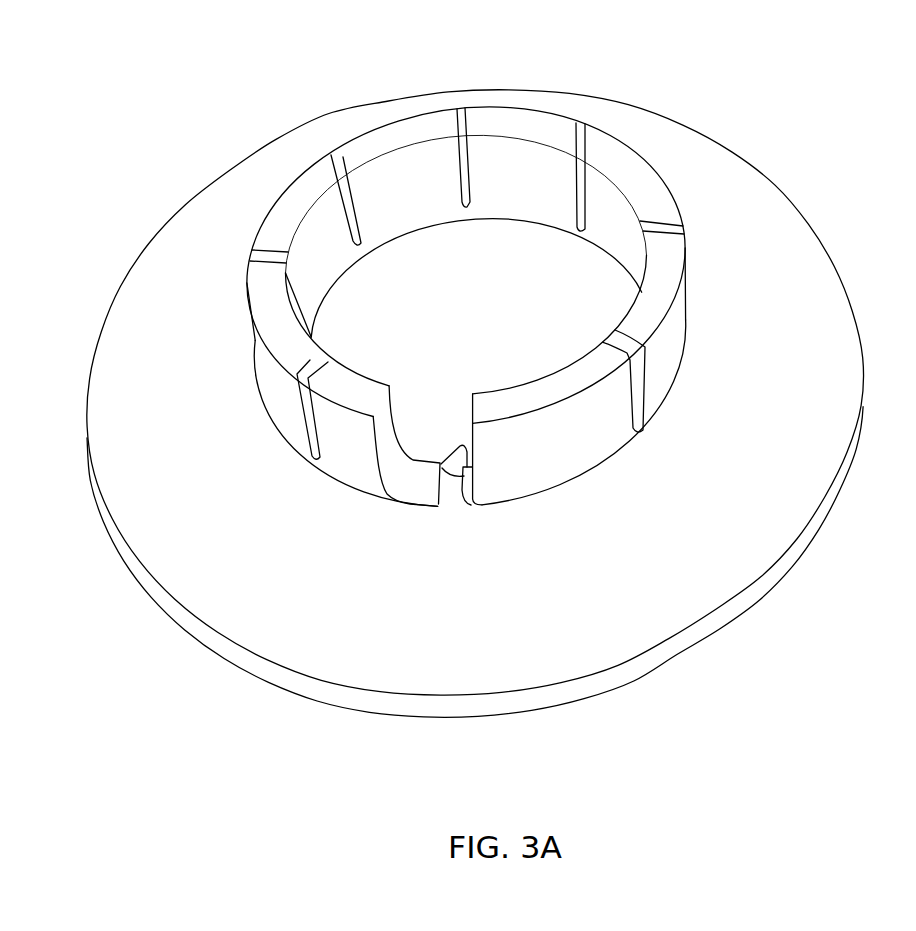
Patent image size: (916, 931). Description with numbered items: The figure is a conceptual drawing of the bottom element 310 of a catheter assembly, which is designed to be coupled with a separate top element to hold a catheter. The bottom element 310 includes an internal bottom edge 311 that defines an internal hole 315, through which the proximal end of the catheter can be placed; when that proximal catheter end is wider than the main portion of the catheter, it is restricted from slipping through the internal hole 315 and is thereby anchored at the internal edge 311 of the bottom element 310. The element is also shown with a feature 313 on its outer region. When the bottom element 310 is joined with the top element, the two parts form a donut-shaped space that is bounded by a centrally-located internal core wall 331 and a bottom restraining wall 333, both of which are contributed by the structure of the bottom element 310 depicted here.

The bottom element 310 is at (491, 404).
The internal bottom edge 311 is at (466, 305).
The outer rim edge of plate 313 is at (841, 487).
The internal hole 315 is at (414, 478).
The internal core wall 331 is at (502, 150).
The bottom restraining wall 333 is at (677, 580).